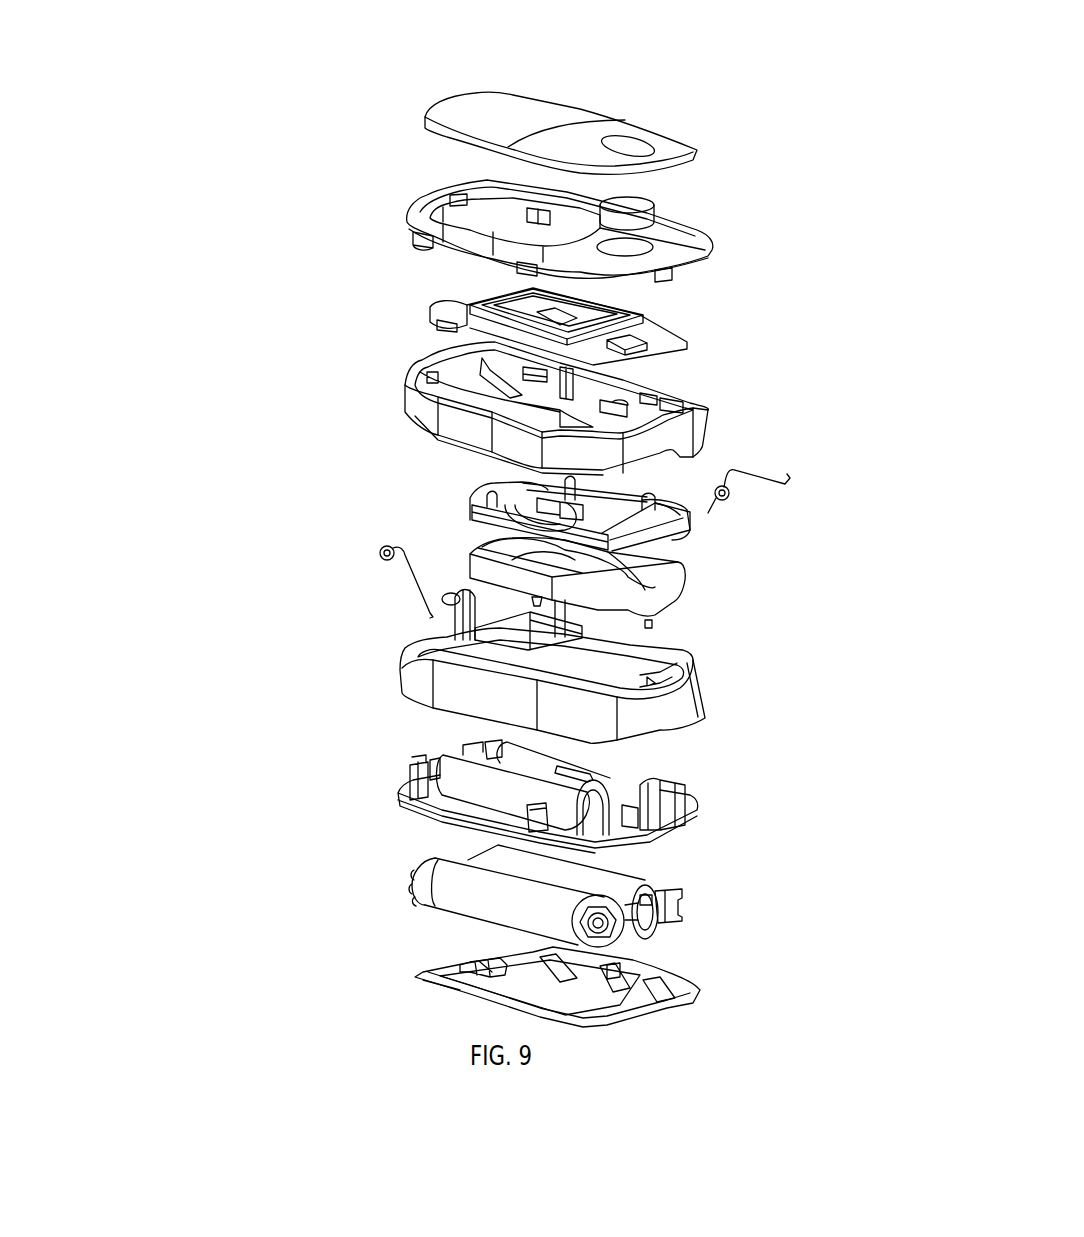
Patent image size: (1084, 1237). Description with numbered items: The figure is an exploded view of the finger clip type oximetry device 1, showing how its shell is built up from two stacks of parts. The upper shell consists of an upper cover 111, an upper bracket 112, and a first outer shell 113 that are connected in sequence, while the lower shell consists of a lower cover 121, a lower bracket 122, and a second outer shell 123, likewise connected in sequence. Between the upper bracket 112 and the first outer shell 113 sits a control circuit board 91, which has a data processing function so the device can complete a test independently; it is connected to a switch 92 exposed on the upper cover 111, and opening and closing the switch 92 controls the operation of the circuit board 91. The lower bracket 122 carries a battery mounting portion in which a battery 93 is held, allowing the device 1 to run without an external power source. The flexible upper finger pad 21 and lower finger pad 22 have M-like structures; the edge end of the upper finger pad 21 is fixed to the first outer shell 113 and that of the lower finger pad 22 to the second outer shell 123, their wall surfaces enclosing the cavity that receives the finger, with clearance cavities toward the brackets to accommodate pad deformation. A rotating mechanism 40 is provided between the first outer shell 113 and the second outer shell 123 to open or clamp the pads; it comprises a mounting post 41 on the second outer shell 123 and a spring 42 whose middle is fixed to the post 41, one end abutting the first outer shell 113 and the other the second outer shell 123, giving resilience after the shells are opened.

The finger clip type oximetry device 1 is at (612, 82).
The upper cover 111 is at (462, 111).
The upper bracket 112 is at (407, 213).
The first outer shell 113 is at (407, 385).
The switch 92 is at (647, 203).
The control circuit board 91 is at (650, 347).
The rotating mechanism 40 is at (203, 550).
The mounting post 41 is at (446, 596).
The spring 42 is at (410, 582).
The upper finger pad 21 is at (683, 532).
The lower finger pad 22 is at (673, 600).
The second outer shell 123 is at (458, 690).
The lower bracket 122 is at (472, 785).
The battery 93 is at (620, 890).
The lower cover 121 is at (450, 972).